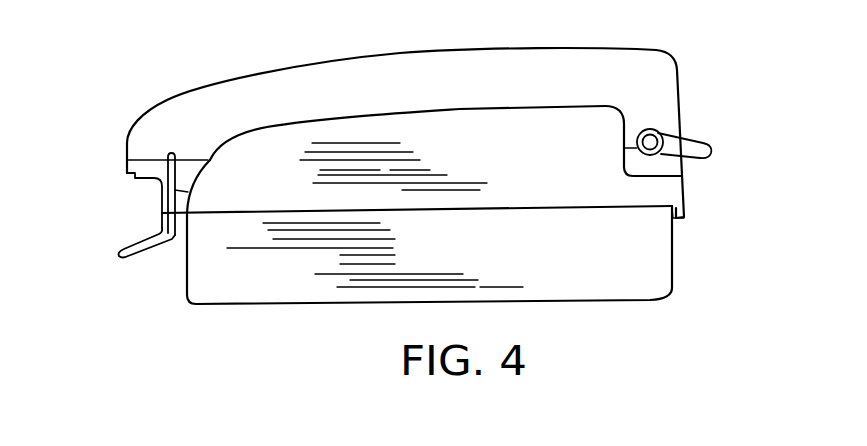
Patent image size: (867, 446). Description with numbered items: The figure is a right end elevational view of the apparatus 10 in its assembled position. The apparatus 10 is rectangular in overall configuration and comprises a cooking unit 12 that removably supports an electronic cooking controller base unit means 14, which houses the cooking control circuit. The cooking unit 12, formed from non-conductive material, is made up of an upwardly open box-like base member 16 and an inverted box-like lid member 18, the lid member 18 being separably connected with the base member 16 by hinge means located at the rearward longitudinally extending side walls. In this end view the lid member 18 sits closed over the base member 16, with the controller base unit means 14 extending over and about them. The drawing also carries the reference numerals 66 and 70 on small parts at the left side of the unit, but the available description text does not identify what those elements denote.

The apparatus 10 is at (670, 43).
The cooking unit 12 is at (700, 215).
The electronic cooking controller base unit means 14 is at (420, 47).
The base member 16 is at (443, 265).
The lid member 18 is at (453, 160).
The pivot pin with arm 66 is at (170, 248).
The latch flange 70 is at (133, 173).